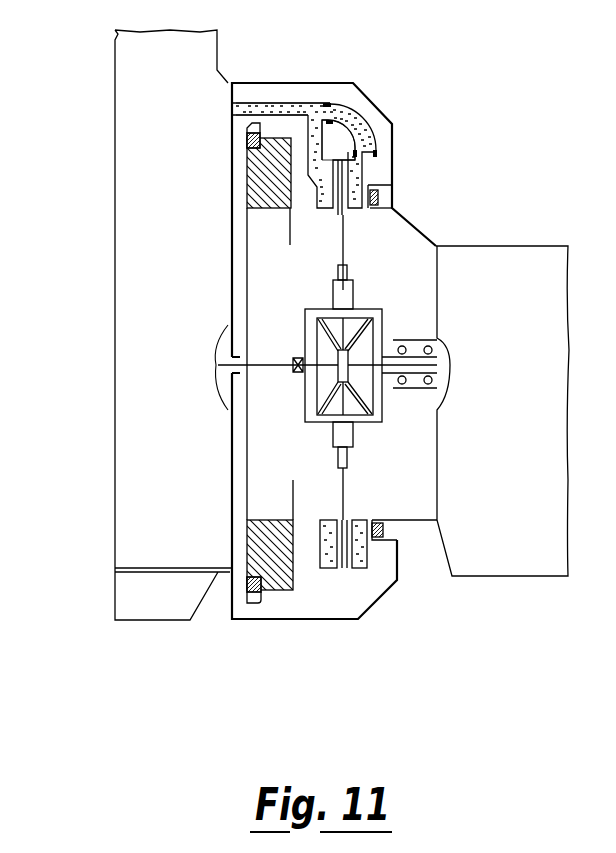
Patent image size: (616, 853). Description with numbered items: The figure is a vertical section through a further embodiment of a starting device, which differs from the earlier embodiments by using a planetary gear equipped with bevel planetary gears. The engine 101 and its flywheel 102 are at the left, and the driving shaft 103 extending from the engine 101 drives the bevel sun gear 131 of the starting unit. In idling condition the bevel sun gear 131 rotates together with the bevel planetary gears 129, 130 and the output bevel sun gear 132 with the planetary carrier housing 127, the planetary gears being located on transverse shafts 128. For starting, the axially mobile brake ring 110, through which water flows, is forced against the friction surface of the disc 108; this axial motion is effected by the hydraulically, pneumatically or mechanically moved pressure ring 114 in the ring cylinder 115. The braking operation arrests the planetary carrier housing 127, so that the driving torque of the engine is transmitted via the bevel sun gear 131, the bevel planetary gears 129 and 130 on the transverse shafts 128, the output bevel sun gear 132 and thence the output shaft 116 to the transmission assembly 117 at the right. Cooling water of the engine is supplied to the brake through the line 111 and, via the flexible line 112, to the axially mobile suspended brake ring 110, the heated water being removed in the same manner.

The engine 101 is at (178, 78).
The flywheel 102 is at (262, 172).
The driving shaft 103 is at (273, 363).
The disc 108 is at (345, 486).
The axially mobile brake ring 110 is at (353, 190).
The line 111 is at (278, 104).
The flexible line 112 is at (363, 118).
The pressure ring 114 is at (383, 531).
The ring cylinder 115 is at (383, 541).
The output shaft 116 is at (412, 363).
The transmission assembly 117 is at (523, 525).
The planetary carrier housing 127 is at (318, 307).
The transverse shafts 128 is at (347, 297).
The bevel planetary gear 129 is at (317, 345).
The bevel planetary gear 130 is at (327, 407).
The bevel sun gear 131 is at (318, 387).
The output bevel sun gear 132 is at (367, 340).